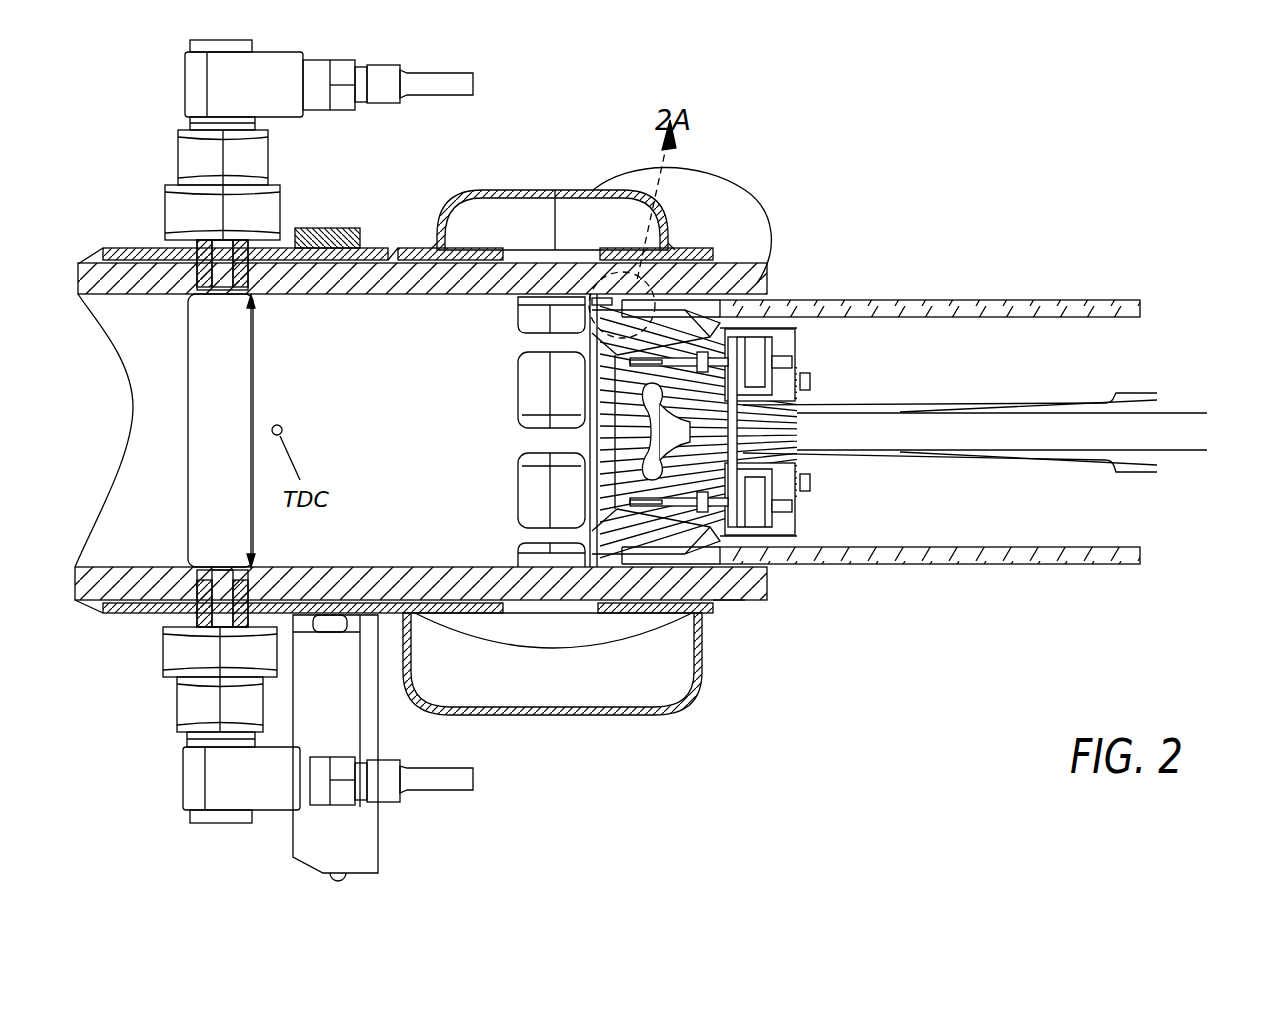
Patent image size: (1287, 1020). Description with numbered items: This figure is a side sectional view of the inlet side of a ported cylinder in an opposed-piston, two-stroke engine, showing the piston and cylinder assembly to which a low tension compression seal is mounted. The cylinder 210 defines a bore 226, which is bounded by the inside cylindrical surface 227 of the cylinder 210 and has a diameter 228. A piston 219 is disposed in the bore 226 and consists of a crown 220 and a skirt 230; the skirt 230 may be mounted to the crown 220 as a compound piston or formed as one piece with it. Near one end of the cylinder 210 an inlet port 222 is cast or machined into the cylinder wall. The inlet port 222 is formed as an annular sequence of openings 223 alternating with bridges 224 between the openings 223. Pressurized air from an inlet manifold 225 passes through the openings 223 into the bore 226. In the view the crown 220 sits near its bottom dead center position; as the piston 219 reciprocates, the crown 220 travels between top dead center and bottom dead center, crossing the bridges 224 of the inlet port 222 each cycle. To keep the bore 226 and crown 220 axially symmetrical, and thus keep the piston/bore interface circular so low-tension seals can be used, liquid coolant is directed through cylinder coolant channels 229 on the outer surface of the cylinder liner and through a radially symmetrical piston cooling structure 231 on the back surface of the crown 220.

The cylinder 210 is at (421, 326).
The piston 219 is at (1220, 293).
The crown 220 is at (603, 443).
The inlet port 222 is at (507, 430).
The openings 223 is at (530, 312).
The bridges 224 is at (468, 294).
The inlet manifold 225 is at (670, 653).
The bore 226 is at (188, 294).
The inside cylindrical surface 227 is at (333, 296).
The diameter 228 is at (253, 393).
The cylinder coolant channels 229 is at (293, 620).
The skirt 230 is at (907, 300).
The piston cooling structure 231 is at (680, 432).